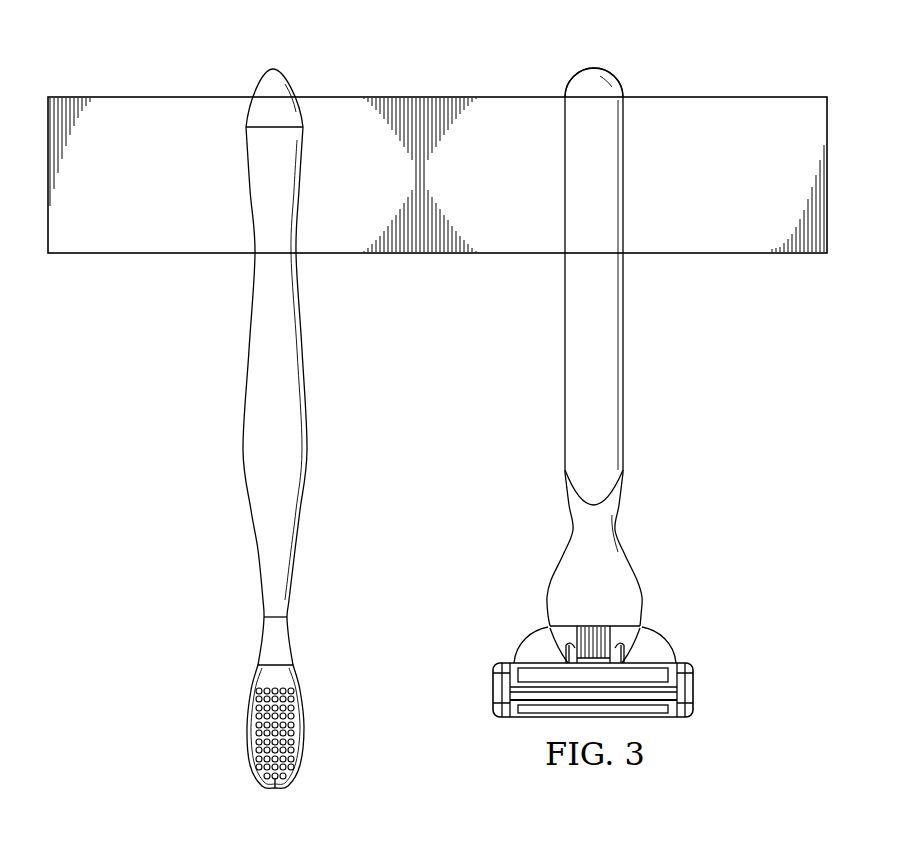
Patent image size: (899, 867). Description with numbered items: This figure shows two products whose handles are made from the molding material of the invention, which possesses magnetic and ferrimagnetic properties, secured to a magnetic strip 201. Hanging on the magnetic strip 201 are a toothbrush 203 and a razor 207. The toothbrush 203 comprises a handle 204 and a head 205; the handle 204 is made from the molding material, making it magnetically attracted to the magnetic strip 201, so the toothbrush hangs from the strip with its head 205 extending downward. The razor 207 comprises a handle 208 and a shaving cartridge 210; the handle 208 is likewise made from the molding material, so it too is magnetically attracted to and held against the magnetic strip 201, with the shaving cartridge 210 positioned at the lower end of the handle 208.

The magnetic strip 201 is at (332, 107).
The toothbrush 203 is at (263, 73).
The handle 204 is at (249, 456).
The head 205 is at (259, 677).
The razor 207 is at (613, 74).
The handle 208 is at (623, 309).
The shaving cartridge 210 is at (693, 690).